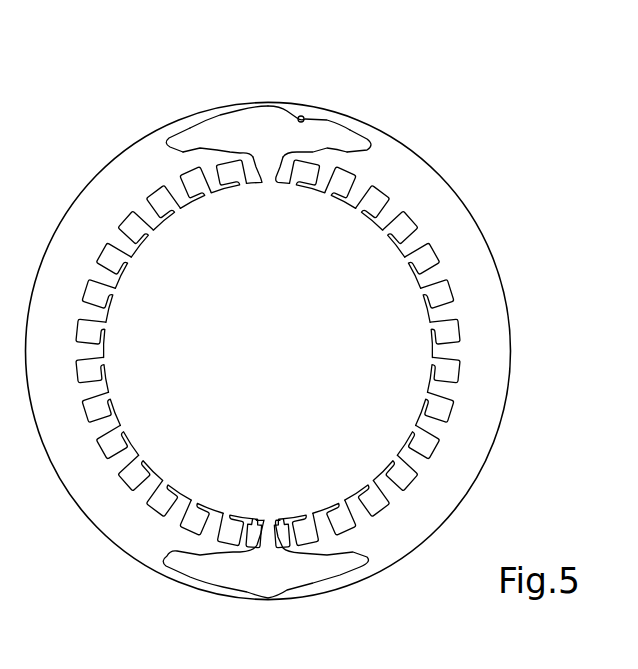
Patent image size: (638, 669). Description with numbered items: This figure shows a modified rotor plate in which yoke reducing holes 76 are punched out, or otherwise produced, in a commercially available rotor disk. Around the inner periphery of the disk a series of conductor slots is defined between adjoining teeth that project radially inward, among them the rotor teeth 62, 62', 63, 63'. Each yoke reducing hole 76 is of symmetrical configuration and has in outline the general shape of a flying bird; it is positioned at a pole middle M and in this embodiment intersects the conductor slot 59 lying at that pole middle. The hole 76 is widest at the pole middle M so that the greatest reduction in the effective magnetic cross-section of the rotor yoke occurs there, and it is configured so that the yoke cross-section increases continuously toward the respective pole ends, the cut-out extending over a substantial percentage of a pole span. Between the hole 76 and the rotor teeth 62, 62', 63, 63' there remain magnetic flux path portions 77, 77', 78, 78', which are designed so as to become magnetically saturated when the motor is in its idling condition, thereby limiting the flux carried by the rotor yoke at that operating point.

The conductor slot 59 is at (267, 185).
The rotor tooth 62 is at (226, 206).
The rotor tooth 62' is at (309, 209).
The rotor tooth 63 is at (190, 217).
The rotor tooth 63' is at (345, 219).
The yoke reducing hole 76 is at (304, 117).
The magnetic flux path portion 77 is at (225, 98).
The magnetic flux path portion 77' is at (337, 105).
The magnetic flux path portion 78 is at (153, 111).
The magnetic flux path portion 78' is at (406, 127).
The pole middle M is at (267, 94).